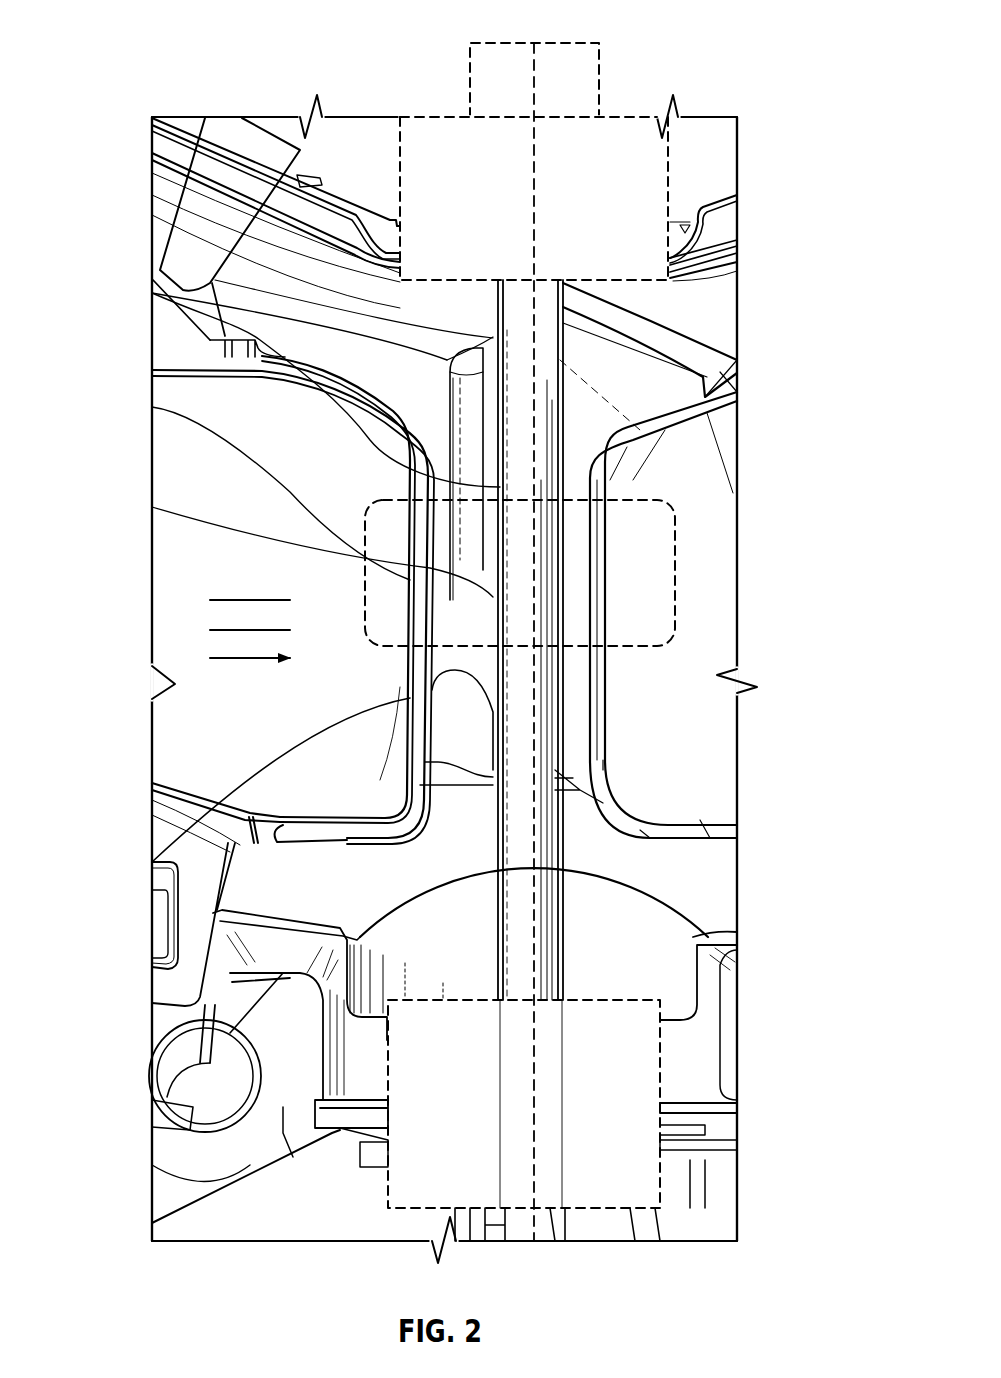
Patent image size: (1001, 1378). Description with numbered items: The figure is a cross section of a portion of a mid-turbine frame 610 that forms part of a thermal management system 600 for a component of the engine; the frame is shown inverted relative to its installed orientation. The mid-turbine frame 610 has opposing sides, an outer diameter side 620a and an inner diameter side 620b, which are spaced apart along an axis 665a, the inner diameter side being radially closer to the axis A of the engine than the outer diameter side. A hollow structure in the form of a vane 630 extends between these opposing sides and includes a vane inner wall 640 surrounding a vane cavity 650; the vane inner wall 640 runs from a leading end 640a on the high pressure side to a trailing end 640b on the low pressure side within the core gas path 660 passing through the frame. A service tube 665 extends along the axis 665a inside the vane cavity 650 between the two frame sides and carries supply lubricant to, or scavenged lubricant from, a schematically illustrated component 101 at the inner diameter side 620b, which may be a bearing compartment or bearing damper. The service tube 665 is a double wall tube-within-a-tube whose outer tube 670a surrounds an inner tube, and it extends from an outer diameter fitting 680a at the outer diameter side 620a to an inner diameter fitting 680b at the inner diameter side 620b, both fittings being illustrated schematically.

The thermal management system 600 is at (186, 62).
The mid-turbine frame 610 is at (770, 1018).
The component 101 is at (599, 60).
The axis 665a is at (535, 70).
The outer diameter side 620a is at (759, 1218).
The inner diameter side 620b is at (674, 149).
The outer diameter fitting 680a is at (668, 1110).
The inner diameter fitting 680b is at (670, 185).
The service tube 665 is at (152, 293).
The vane inner wall 640 is at (728, 392).
The leading end 640a is at (160, 886).
The trailing end 640b is at (605, 770).
The vane cavity 650 is at (575, 678).
The vane 630 is at (603, 723).
The outer tube 670a is at (152, 407).
The core gas path 660 is at (300, 660).
The axis of the engine A is at (365, 600).